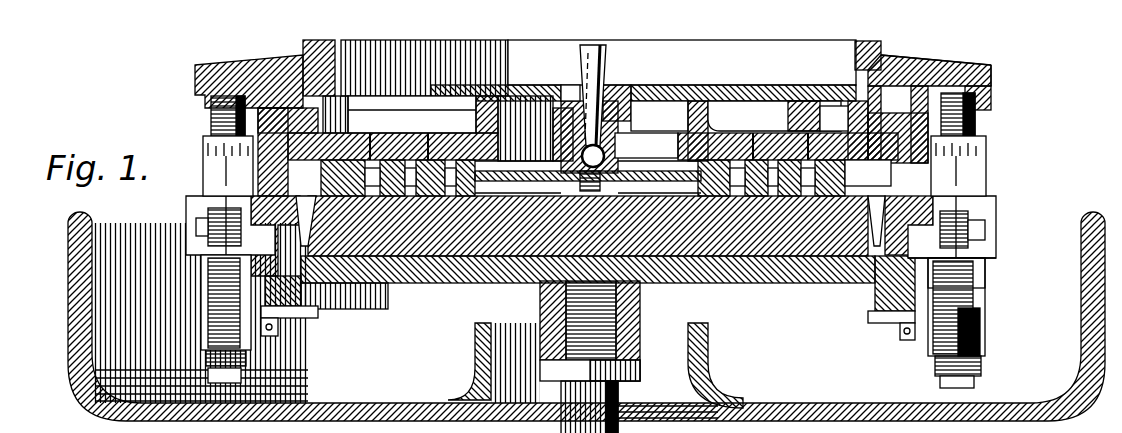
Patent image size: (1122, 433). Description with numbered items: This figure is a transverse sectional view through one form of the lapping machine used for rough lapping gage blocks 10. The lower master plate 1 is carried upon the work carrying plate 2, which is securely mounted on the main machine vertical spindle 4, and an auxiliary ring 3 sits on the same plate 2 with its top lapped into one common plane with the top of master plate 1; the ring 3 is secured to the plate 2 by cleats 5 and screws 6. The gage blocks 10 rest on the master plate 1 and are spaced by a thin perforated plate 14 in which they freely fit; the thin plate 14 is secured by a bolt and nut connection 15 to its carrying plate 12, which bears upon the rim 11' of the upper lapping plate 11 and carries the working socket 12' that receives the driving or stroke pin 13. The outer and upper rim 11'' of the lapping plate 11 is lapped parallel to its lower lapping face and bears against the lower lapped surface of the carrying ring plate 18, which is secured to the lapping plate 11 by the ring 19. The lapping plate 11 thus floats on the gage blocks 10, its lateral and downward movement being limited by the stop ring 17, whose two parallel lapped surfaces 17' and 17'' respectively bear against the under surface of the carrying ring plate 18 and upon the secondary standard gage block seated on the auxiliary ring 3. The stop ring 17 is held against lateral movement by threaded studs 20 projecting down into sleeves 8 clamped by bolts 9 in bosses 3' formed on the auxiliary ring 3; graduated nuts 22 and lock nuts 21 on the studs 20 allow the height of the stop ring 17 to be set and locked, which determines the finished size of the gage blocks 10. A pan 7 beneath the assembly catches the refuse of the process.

The master plate 1 is at (450, 252).
The work carrying plate 2 is at (735, 276).
The auxiliary ring 3 is at (991, 273).
The boss 3' is at (587, 218).
The main machine vertical spindle 4 is at (612, 392).
The cleat 5 is at (300, 308).
The screw 6 is at (902, 332).
The pan 7 is at (1040, 413).
The sleeve 8 is at (202, 268).
The bolt 9 is at (990, 200).
The gage block 10 is at (455, 165).
The lapping plate 11 is at (788, 130).
The rim of the lapping plate 11' is at (669, 130).
The outer and upper rim of the lapping plate 11'' is at (936, 56).
The carrying plate 12 is at (643, 81).
The working socket 12' is at (619, 129).
The driving or stroke pin 13 is at (602, 47).
The thin plate 14 is at (505, 166).
The bolt and nut connection 15 is at (600, 176).
The stop ring 17 is at (614, 125).
The lapped surface of stop ring 17' is at (1014, 66).
The lapped surface of stop ring 17'' is at (859, 131).
The carrying ring plate 18 is at (848, 62).
The ring 19 is at (878, 40).
The threaded stud 20 is at (203, 118).
The lock nut 21 is at (978, 134).
The graduated nut 22 is at (755, 130).